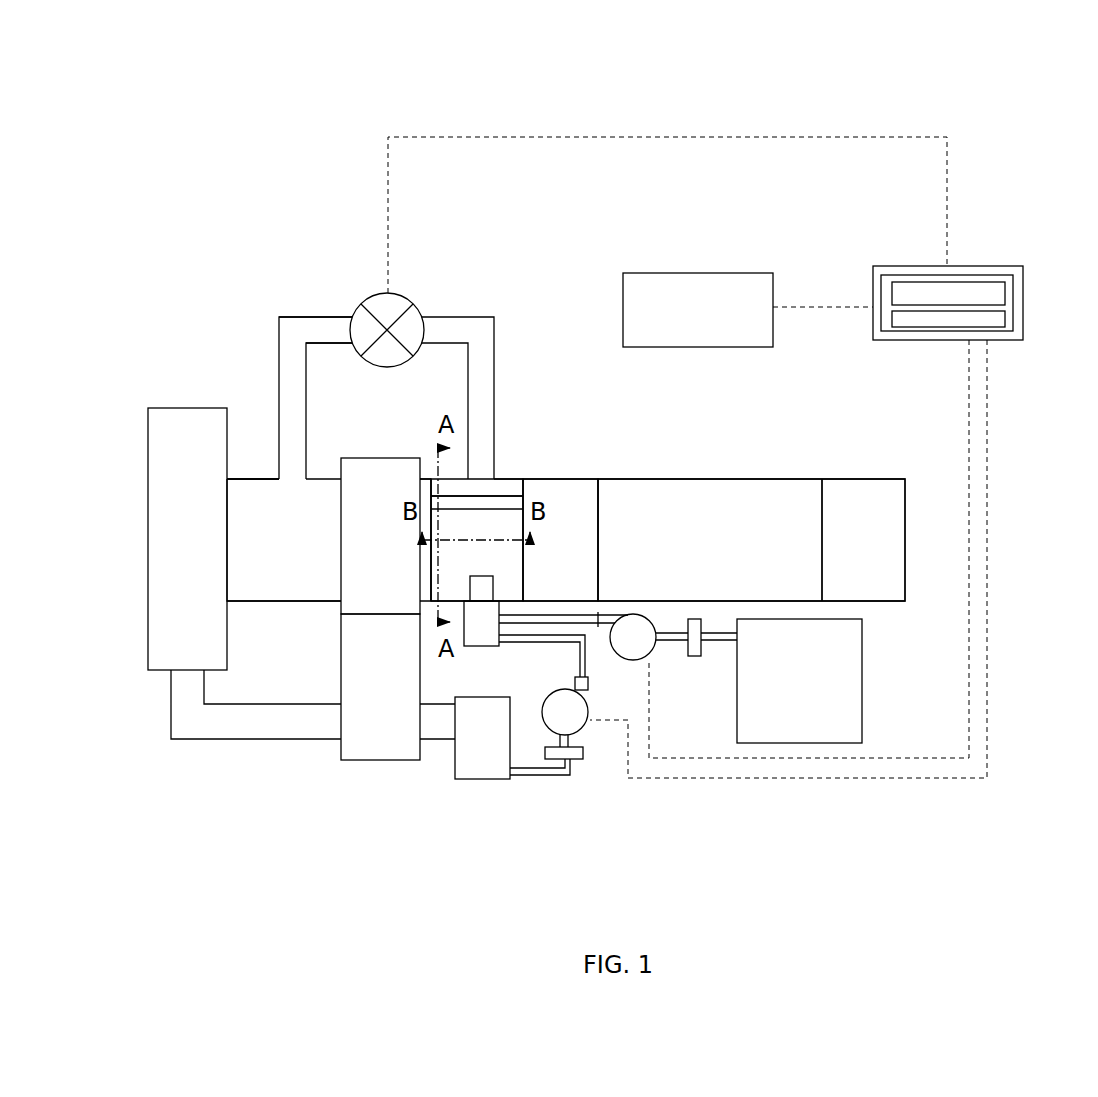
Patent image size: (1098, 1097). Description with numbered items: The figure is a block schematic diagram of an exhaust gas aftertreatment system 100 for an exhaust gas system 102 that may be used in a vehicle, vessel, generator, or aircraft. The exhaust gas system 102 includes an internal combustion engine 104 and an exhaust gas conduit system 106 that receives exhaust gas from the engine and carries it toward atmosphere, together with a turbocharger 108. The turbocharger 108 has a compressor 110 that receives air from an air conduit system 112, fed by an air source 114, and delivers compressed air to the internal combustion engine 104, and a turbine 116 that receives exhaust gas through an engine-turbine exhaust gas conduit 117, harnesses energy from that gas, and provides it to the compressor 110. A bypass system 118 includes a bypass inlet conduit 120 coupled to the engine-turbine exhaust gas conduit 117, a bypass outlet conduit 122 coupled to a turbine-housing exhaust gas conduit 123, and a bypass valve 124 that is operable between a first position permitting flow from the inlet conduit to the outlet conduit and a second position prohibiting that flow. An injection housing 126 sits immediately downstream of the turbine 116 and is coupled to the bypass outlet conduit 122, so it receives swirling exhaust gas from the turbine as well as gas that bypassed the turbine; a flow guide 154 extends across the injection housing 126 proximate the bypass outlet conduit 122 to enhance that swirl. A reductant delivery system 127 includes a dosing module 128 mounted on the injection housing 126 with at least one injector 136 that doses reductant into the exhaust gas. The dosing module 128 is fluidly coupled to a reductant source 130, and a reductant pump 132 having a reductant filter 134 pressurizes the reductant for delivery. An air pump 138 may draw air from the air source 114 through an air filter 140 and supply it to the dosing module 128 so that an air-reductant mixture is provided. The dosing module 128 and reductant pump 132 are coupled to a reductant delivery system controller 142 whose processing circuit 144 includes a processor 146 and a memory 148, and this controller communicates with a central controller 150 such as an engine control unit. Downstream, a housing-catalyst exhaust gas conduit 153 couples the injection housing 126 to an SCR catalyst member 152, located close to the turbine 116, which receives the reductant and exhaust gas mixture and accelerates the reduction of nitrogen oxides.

The exhaust gas aftertreatment system 100 is at (979, 115).
The exhaust gas system 102 is at (222, 302).
The internal combustion engine 104 is at (212, 407).
The exhaust gas conduit system 106 is at (603, 421).
The turbocharger 108 is at (305, 632).
The compressor 110 is at (367, 761).
The air conduit system 112 is at (211, 762).
The air source 114 is at (498, 780).
The turbine 116 is at (407, 457).
The engine-turbine exhaust gas conduit 117 is at (260, 477).
The bypass system 118 is at (339, 270).
The bypass inlet conduit 120 is at (298, 316).
The bypass outlet conduit 122 is at (470, 316).
The turbine-housing exhaust gas conduit 123 is at (428, 477).
The bypass valve 124 is at (400, 294).
The injection housing 126 is at (517, 477).
The reductant delivery system 127 is at (661, 796).
The dosing module 128 is at (470, 648).
The reductant source 130 is at (862, 690).
The reductant pump 132 is at (633, 661).
The reductant filter 134 is at (697, 658).
The injector 136 is at (493, 585).
The air pump 138 is at (563, 689).
The air filter 140 is at (581, 761).
The reductant delivery system controller 142 is at (1000, 265).
The processing circuit 144 is at (970, 274).
The processor 146 is at (1005, 285).
The memory 148 is at (892, 318).
The central controller 150 is at (700, 272).
The SCR catalyst member 152 is at (773, 477).
The housing-catalyst exhaust gas conduit 153 is at (585, 477).
The flow guide 154 is at (493, 494).